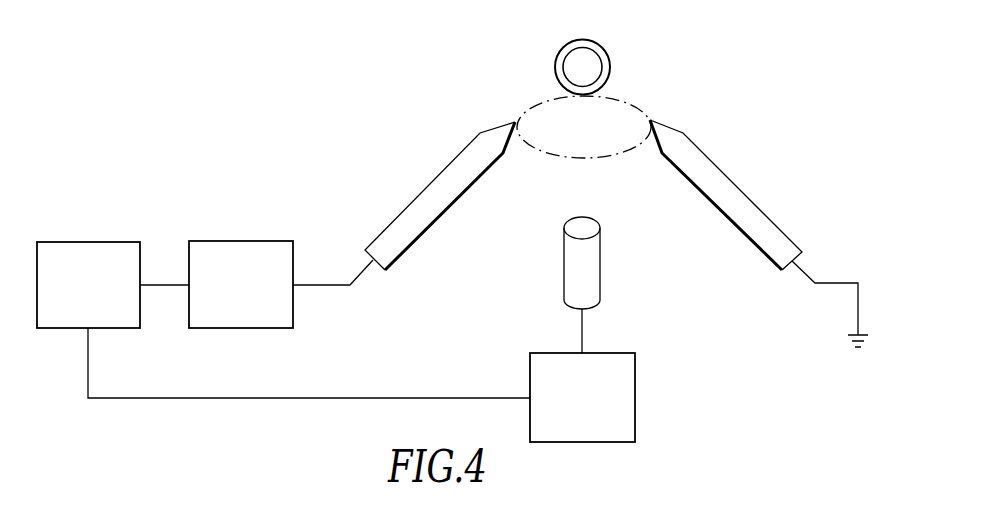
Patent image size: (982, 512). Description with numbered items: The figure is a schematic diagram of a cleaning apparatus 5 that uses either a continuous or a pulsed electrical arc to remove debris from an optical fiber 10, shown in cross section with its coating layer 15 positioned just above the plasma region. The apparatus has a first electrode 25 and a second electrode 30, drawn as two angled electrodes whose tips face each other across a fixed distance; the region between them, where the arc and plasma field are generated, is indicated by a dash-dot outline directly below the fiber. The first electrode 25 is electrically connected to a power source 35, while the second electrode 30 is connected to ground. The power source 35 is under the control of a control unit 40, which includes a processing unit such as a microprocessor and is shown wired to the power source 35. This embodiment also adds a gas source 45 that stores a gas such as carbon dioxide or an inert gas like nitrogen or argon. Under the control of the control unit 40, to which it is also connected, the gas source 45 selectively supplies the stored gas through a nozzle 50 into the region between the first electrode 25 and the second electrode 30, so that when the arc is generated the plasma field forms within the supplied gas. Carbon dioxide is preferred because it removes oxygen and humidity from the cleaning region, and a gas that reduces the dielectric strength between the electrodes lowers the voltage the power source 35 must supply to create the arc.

The cleaning apparatus 5 is at (680, 92).
The optical fiber 10 is at (558, 48).
The coating layer 15 is at (600, 50).
The first electrode 25 is at (427, 188).
The second electrode 30 is at (720, 168).
The power source 35 is at (230, 241).
The control unit 40 is at (88, 242).
The gas source 45 is at (637, 387).
The nozzle 50 is at (602, 255).